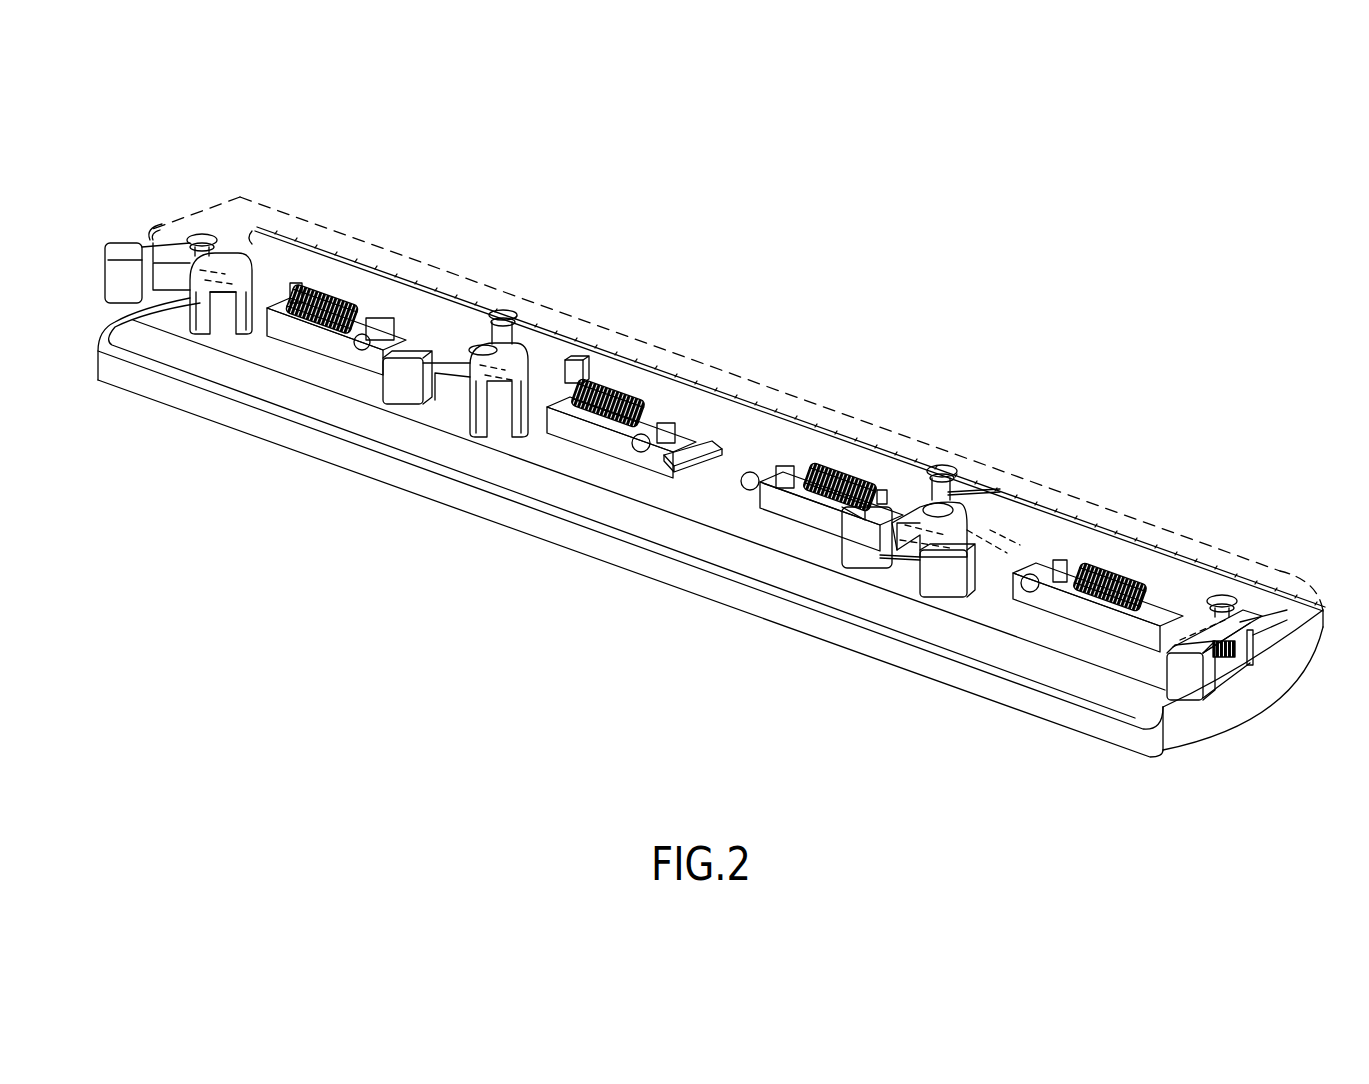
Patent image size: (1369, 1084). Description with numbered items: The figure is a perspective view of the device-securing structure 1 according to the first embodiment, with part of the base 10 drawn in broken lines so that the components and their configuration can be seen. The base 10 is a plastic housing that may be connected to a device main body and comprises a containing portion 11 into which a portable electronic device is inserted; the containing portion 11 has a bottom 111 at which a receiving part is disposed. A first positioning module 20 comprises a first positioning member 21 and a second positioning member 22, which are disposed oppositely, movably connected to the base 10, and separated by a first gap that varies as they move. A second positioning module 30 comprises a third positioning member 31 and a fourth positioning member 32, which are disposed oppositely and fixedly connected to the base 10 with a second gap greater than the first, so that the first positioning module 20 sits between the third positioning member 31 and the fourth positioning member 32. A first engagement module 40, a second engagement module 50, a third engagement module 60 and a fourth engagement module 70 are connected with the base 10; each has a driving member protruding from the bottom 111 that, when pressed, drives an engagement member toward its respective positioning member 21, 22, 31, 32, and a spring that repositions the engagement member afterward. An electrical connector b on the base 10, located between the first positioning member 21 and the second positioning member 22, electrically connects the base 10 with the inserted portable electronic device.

The device-securing structure 1 is at (1197, 201).
The base 10 is at (641, 579).
The containing portion 11 is at (297, 398).
The bottom 111 is at (607, 443).
The first positioning module 20 is at (535, 328).
The first positioning member 21 is at (947, 583).
The second positioning member 22 is at (408, 388).
The second positioning module 30 is at (238, 217).
The third positioning member 31 is at (1186, 673).
The fourth positioning member 32 is at (118, 290).
The first engagement module 40 is at (838, 452).
The second engagement module 50 is at (630, 380).
The third engagement module 60 is at (1118, 555).
The fourth engagement module 70 is at (358, 283).
The electrical connector b is at (712, 448).